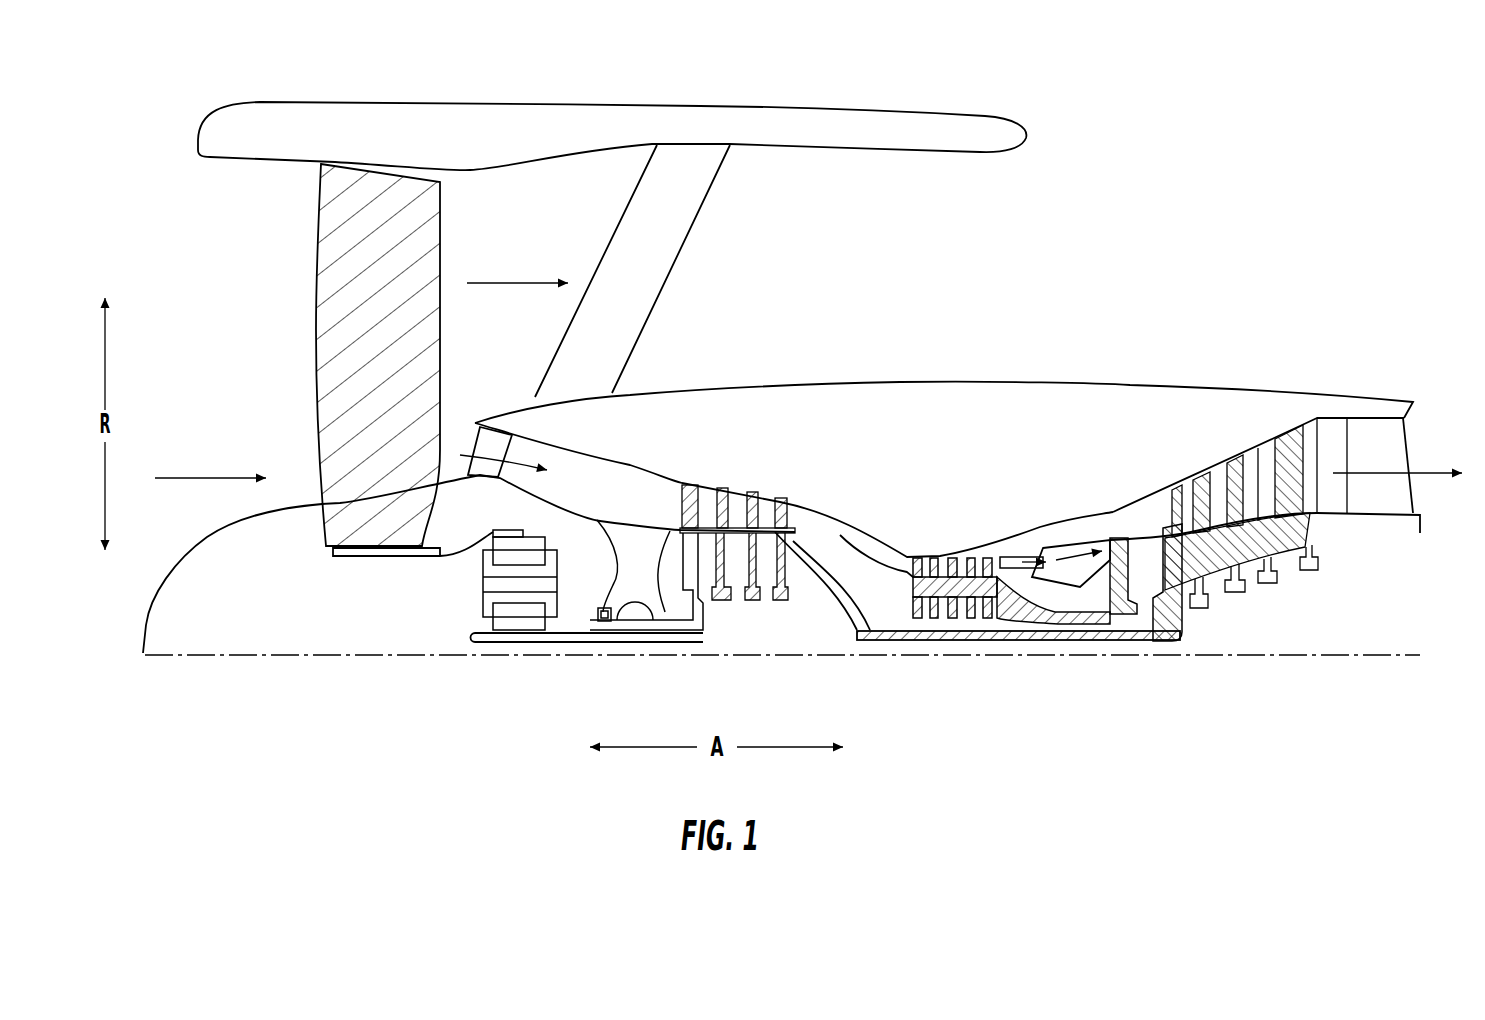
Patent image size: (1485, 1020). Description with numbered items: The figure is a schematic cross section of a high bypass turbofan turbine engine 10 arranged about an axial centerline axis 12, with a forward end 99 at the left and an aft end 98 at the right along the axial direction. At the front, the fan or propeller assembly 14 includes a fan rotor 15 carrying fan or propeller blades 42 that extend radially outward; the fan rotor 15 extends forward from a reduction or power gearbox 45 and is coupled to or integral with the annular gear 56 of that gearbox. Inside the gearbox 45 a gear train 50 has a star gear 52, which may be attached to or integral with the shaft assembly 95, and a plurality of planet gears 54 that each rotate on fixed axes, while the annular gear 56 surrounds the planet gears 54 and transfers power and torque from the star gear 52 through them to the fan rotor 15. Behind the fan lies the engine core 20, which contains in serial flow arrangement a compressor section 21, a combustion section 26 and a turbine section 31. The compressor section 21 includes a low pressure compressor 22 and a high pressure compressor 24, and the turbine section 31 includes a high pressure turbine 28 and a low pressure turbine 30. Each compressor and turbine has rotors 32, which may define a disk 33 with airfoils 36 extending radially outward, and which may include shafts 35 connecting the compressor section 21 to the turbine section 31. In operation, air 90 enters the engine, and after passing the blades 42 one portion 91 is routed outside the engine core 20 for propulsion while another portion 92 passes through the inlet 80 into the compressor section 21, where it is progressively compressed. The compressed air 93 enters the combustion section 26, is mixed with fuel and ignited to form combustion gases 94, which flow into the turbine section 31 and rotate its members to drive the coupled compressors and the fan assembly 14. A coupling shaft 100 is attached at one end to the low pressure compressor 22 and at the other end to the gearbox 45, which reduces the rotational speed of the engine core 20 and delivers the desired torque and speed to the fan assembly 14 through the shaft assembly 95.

The turbine engine 10 is at (1150, 190).
The axial centerline axis 12 is at (268, 658).
The fan or propeller assembly 14 is at (313, 462).
The fan rotor 15 is at (433, 553).
The engine core 20 is at (897, 405).
The compressor section 21 is at (940, 480).
The low pressure compressor 22 is at (745, 475).
The high pressure compressor 24 is at (953, 552).
The combustion section 26 is at (1232, 507).
The high pressure turbine 28 is at (1117, 545).
The low pressure turbine 30 is at (1220, 476).
The turbine section 31 is at (1243, 445).
The rotor 32 is at (781, 600).
The disk 33 is at (724, 592).
The shaft 35 is at (935, 635).
The airfoils 36 is at (688, 487).
The fan or propeller blades 42 is at (330, 268).
The reduction or power gearbox 45 is at (547, 570).
The gear train 50 is at (513, 557).
The star gear 52 is at (537, 630).
The planet gears 54 is at (528, 540).
The annular gear 56 is at (515, 530).
The inlet 80 is at (466, 430).
The air 90 is at (188, 477).
The air 91 is at (507, 282).
The air 92 is at (520, 448).
The compressed air 93 is at (1020, 560).
The combustion gases 94 is at (1079, 530).
The shaft assembly 95 is at (531, 641).
The aft end 98 is at (1439, 597).
The forward end 99 is at (99, 598).
The coupling shaft 100 is at (583, 642).